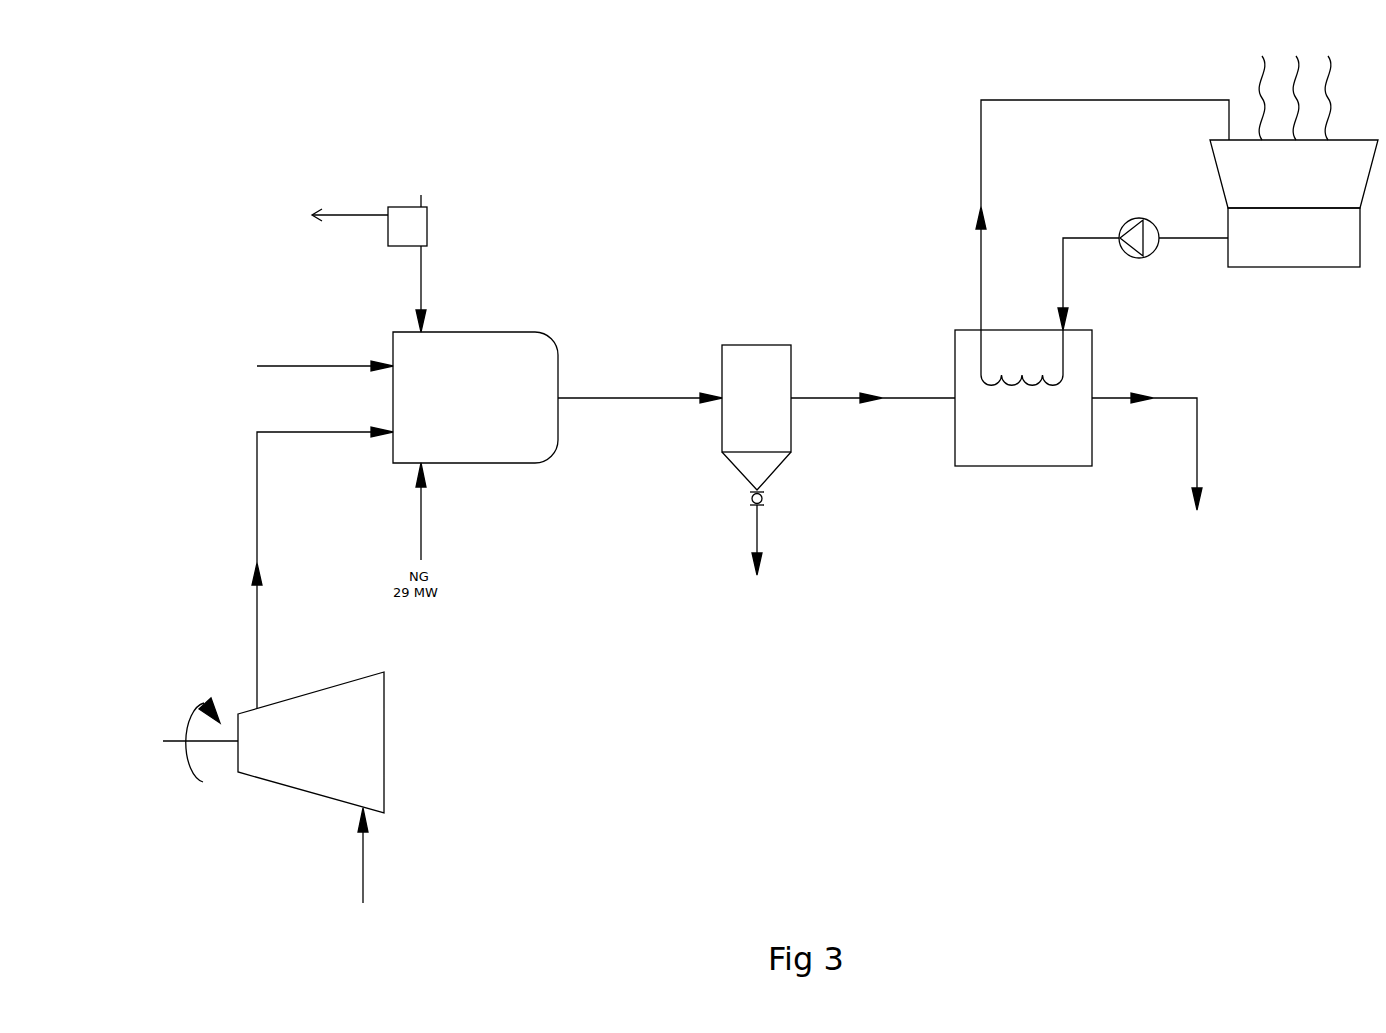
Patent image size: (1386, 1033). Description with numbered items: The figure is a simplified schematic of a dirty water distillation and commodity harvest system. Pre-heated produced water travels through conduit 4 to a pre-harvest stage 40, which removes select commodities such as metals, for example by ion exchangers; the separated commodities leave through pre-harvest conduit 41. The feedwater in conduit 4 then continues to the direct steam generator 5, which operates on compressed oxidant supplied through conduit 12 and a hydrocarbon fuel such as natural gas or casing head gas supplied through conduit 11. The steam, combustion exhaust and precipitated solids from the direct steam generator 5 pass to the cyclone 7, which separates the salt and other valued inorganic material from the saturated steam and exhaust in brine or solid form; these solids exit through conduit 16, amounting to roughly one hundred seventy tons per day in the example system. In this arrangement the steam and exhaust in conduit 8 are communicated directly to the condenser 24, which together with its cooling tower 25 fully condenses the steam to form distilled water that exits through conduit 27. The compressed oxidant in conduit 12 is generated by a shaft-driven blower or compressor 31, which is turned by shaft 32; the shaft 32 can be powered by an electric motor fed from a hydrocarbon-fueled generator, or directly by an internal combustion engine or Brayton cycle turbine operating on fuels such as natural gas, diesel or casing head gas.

The conduit 4 is at (423, 265).
The direct steam generator 5 is at (485, 332).
The cyclone 7 is at (792, 370).
The conduit 8 is at (842, 400).
The conduit 11 is at (313, 362).
The conduit 12 is at (257, 528).
The cyclone exit conduit 16 is at (760, 528).
The condenser 24 is at (1027, 466).
The cooling tower 25 is at (1293, 267).
The conduit 27 is at (1198, 441).
The compressor 31 is at (385, 740).
The shaft 32 is at (172, 743).
The pre-harvest stage 40 is at (430, 232).
The pre-harvest conduit 41 is at (345, 214).